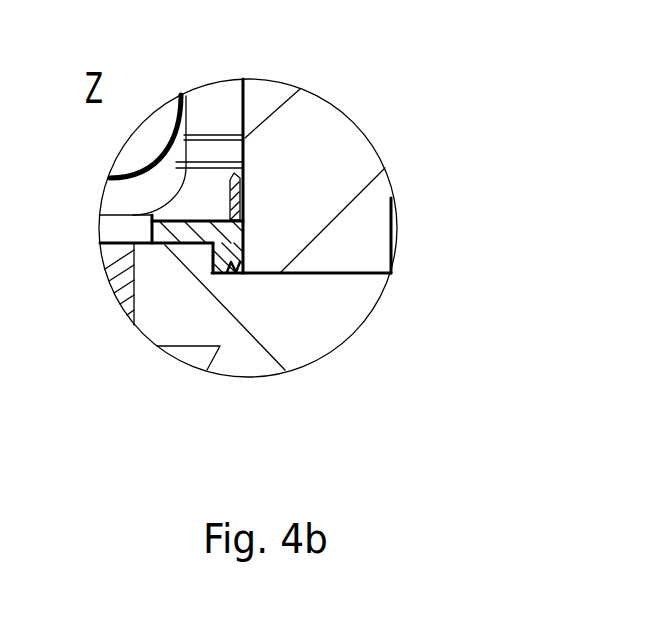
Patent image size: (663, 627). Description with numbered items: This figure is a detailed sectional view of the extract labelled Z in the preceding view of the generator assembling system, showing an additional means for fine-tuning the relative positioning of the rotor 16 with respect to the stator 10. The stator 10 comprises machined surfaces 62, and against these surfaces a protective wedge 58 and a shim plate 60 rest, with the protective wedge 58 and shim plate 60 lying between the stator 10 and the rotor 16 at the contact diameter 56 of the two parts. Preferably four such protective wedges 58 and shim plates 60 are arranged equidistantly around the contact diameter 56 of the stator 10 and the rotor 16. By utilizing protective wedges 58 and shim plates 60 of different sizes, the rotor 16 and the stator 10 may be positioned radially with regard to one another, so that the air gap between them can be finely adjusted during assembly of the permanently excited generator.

The stator 10 is at (307, 132).
The rotor 16 is at (197, 282).
The contact diameter 56 is at (254, 223).
The protective wedge 58 is at (223, 240).
The shim plate 60 is at (242, 271).
The machined surfaces 62 is at (208, 190).